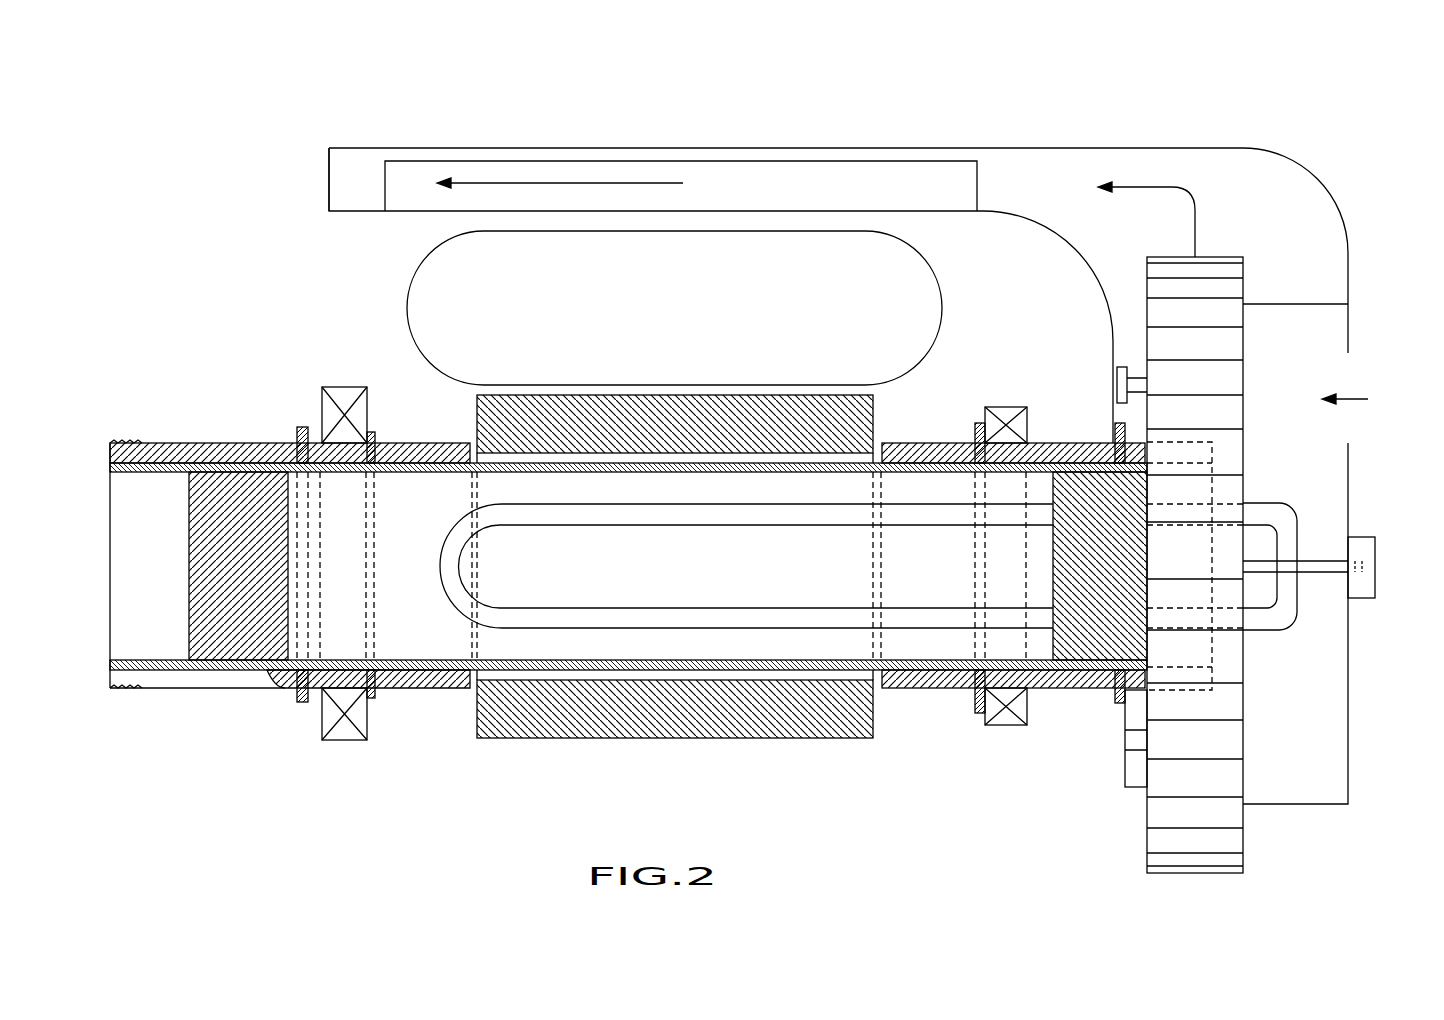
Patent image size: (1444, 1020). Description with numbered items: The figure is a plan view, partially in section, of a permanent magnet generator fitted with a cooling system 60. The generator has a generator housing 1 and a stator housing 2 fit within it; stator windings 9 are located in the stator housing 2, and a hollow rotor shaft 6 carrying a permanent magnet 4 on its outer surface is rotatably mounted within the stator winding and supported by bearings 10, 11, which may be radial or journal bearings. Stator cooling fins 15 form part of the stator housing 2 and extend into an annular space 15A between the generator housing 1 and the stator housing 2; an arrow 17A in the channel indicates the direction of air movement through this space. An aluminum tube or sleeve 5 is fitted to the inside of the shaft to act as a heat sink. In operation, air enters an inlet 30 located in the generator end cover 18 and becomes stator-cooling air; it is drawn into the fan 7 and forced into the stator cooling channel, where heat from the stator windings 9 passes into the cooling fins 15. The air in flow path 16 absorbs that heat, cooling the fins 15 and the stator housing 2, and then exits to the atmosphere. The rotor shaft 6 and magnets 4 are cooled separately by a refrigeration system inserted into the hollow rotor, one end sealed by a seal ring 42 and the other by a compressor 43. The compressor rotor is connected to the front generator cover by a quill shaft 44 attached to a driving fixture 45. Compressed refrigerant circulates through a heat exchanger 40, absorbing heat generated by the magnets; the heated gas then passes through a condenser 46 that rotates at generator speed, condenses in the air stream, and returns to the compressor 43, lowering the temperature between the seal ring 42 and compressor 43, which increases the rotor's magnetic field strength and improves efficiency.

The generator housing 1 is at (947, 147).
The stator housing 2 is at (1043, 218).
The permanent magnet 4 is at (694, 425).
The aluminum tube or sleeve 5 is at (414, 660).
The rotor shaft 6 is at (213, 443).
The fan 7 is at (1220, 265).
The stator windings 9 is at (823, 243).
The bearing 10 is at (333, 741).
The bearing 11 is at (1010, 726).
The stator cooling fins 15 is at (546, 183).
The annular space 15A is at (362, 165).
The flow path 16 is at (1352, 470).
The air flow arrow 17A is at (640, 183).
The generator end cover 18 is at (1325, 190).
The inlet 30 is at (1148, 187).
The heat exchanger 40 is at (937, 620).
The seal ring 42 is at (237, 640).
The compressor 43 is at (1095, 632).
The quill shaft 44 is at (1370, 553).
The driving fixture 45 is at (1328, 575).
The condenser 46 is at (1278, 634).
The cooling system 60 is at (766, 132).